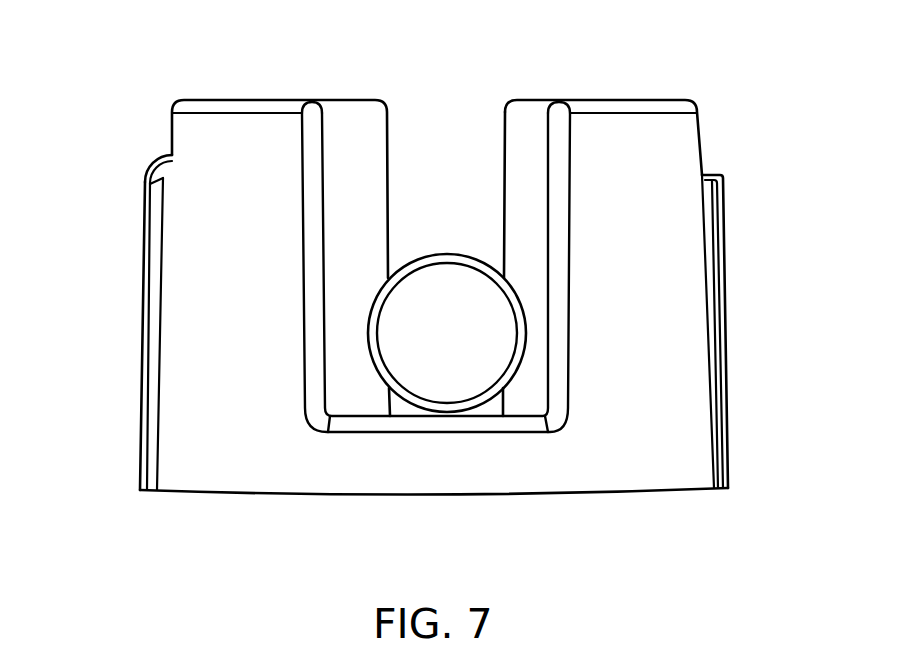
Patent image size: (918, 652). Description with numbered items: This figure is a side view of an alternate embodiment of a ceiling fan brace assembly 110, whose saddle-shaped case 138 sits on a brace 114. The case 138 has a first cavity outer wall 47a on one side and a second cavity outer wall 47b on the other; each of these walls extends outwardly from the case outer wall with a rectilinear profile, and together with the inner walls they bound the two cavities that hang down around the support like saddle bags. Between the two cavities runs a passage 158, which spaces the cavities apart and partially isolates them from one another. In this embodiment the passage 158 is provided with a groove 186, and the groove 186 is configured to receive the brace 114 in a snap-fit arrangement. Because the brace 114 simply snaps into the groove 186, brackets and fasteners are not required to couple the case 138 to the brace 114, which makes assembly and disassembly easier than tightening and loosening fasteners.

The connector body assembly 110 is at (122, 55).
The case 138 is at (143, 131).
The first cavity outer wall 47a is at (145, 222).
The second cavity outer wall 47b is at (725, 223).
The passage 158 is at (442, 120).
The brace 114 is at (425, 242).
The groove 186 is at (378, 350).